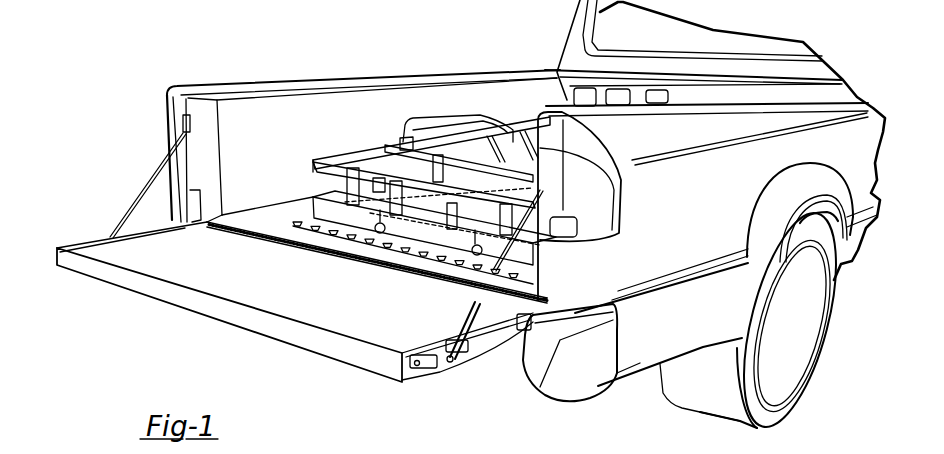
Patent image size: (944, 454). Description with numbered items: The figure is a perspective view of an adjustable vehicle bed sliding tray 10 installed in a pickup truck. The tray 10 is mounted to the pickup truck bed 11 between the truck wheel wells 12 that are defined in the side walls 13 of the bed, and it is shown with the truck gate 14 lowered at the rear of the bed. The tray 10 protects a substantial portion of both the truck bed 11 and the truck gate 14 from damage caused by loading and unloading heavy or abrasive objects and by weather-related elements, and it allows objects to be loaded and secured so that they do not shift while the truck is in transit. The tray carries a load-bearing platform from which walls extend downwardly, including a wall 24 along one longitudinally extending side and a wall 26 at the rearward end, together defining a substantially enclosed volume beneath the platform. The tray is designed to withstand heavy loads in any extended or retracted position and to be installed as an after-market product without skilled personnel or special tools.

The adjustable vehicle bed sliding tray 10 is at (333, 133).
The pickup truck bed 11 is at (268, 226).
The truck wheel wells 12 is at (455, 120).
The side walls 13 is at (233, 115).
The truck gate 14 is at (152, 253).
The wall 24 is at (332, 190).
The wall 26 is at (337, 218).